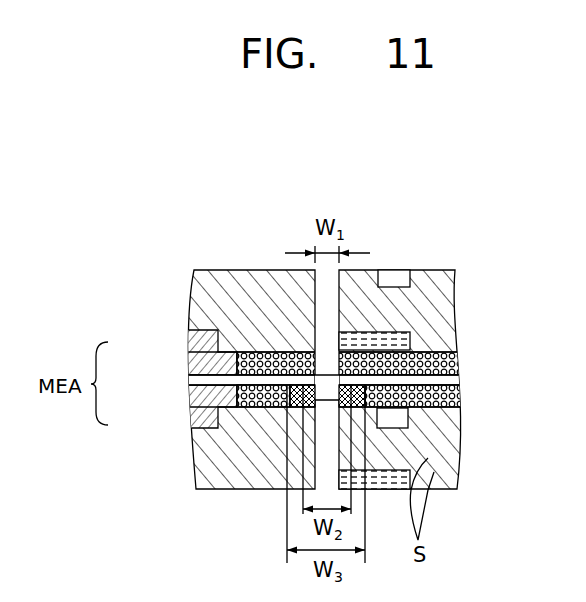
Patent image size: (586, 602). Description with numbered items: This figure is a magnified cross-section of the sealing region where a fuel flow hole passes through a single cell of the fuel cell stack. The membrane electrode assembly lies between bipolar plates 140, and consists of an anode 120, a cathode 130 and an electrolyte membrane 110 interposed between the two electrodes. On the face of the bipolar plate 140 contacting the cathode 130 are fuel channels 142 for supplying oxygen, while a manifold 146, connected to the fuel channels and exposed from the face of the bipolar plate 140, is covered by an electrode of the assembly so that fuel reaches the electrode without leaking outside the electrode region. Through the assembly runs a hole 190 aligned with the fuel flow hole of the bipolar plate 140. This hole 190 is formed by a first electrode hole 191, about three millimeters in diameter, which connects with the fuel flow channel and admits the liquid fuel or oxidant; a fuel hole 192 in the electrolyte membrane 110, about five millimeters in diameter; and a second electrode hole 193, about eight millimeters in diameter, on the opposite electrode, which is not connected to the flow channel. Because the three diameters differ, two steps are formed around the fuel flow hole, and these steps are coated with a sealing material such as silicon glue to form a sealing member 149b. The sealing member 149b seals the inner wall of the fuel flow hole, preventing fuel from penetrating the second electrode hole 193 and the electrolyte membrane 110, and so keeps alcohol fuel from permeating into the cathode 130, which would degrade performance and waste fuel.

The electrolyte membrane 110 is at (255, 378).
The anode 120 is at (240, 358).
The cathode 130 is at (245, 396).
The bipolar plate 140 is at (252, 270).
The fuel channel 142 is at (400, 420).
The manifold 146 is at (412, 348).
The sealing member 149b is at (300, 398).
The hole 190 is at (465, 182).
The first electrode hole 191 is at (316, 375).
The fuel hole 192 is at (373, 350).
The second electrode hole 193 is at (432, 343).